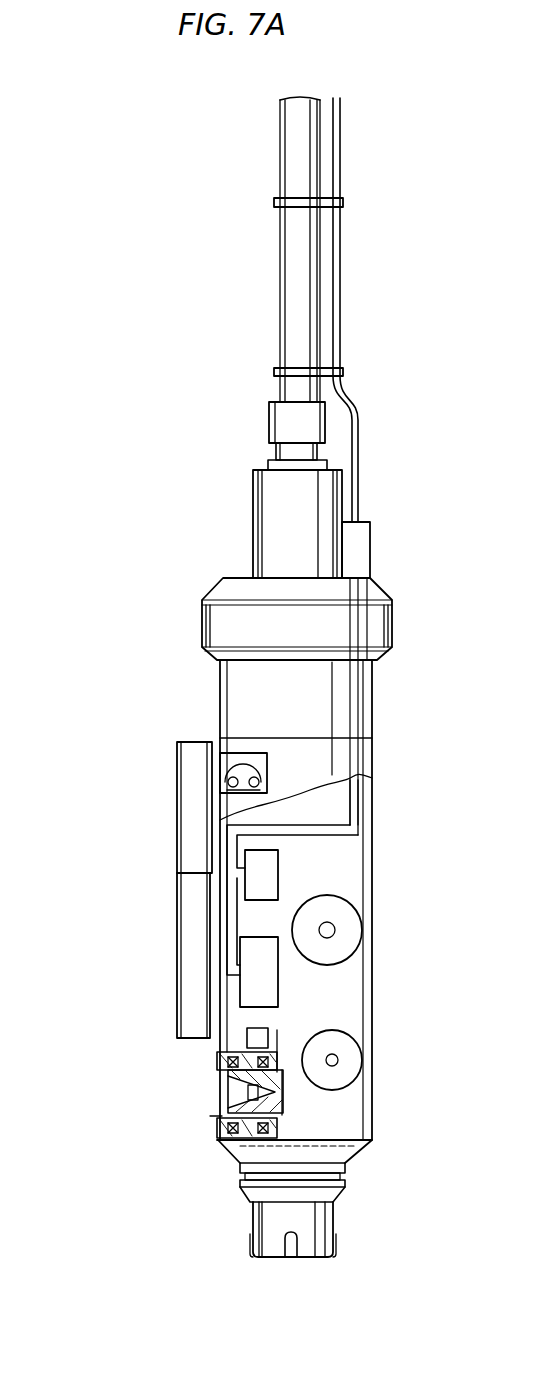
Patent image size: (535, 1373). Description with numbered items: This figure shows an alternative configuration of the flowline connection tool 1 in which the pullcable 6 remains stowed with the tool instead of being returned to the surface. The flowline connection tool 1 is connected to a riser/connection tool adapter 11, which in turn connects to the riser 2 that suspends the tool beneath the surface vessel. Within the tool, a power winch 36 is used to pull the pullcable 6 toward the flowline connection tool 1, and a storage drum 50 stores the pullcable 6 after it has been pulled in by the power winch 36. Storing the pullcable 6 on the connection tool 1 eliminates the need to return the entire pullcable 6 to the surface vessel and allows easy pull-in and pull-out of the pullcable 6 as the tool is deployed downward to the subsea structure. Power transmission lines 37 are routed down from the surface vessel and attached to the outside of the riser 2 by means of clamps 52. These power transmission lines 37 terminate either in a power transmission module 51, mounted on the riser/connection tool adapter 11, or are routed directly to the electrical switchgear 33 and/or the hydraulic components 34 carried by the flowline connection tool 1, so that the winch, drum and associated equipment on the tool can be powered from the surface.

The flowline connection tool 1 is at (372, 708).
The riser 2 is at (280, 250).
The pullcable 6 is at (370, 1008).
The riser/connection tool adapter 11 is at (202, 622).
The electrical switchgear 33 is at (281, 870).
The hydraulic components 34 is at (280, 980).
The power winch 36 is at (350, 1060).
The power transmission lines 37 is at (340, 252).
The storage drum 50 is at (352, 920).
The power transmission module 51 is at (370, 536).
The clamps 52 is at (343, 372).